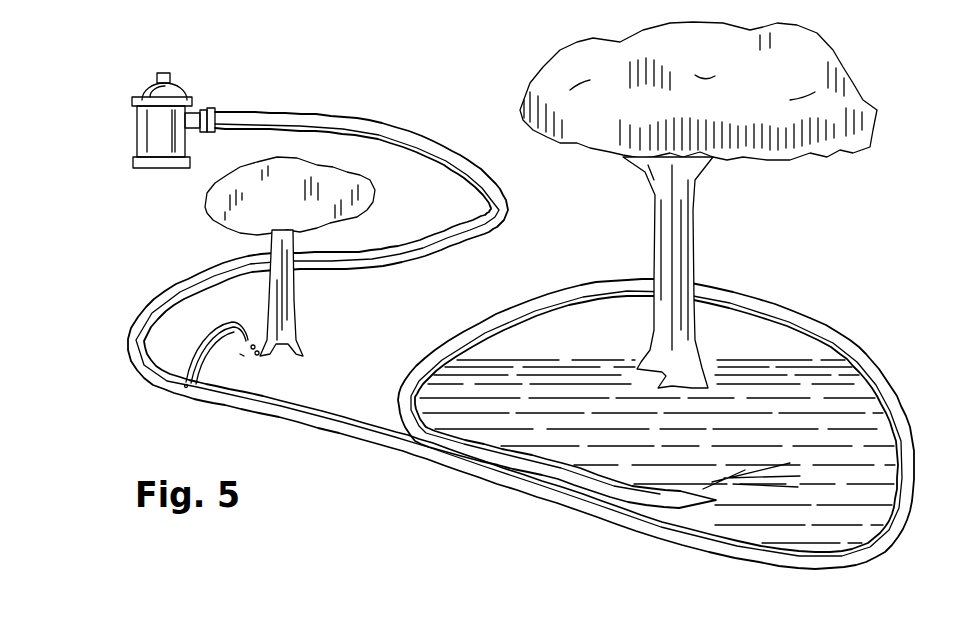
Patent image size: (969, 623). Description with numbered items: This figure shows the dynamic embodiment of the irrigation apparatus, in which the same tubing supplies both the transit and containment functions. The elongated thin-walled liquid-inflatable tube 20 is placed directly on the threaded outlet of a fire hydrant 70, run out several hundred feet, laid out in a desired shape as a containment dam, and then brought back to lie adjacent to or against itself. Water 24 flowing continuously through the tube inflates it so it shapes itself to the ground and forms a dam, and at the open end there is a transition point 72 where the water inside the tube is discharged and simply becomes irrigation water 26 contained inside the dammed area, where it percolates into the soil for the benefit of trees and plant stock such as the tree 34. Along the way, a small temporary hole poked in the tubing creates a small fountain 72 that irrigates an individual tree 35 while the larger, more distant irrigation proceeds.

The liquid-inflatable tube 20 is at (361, 122).
The water 24 is at (187, 384).
The irrigation water 26 is at (800, 517).
The tree 34 is at (675, 241).
The individual tree 35 is at (293, 306).
The hydrant 70 is at (142, 140).
The transition point / small fountain 72 is at (197, 338).